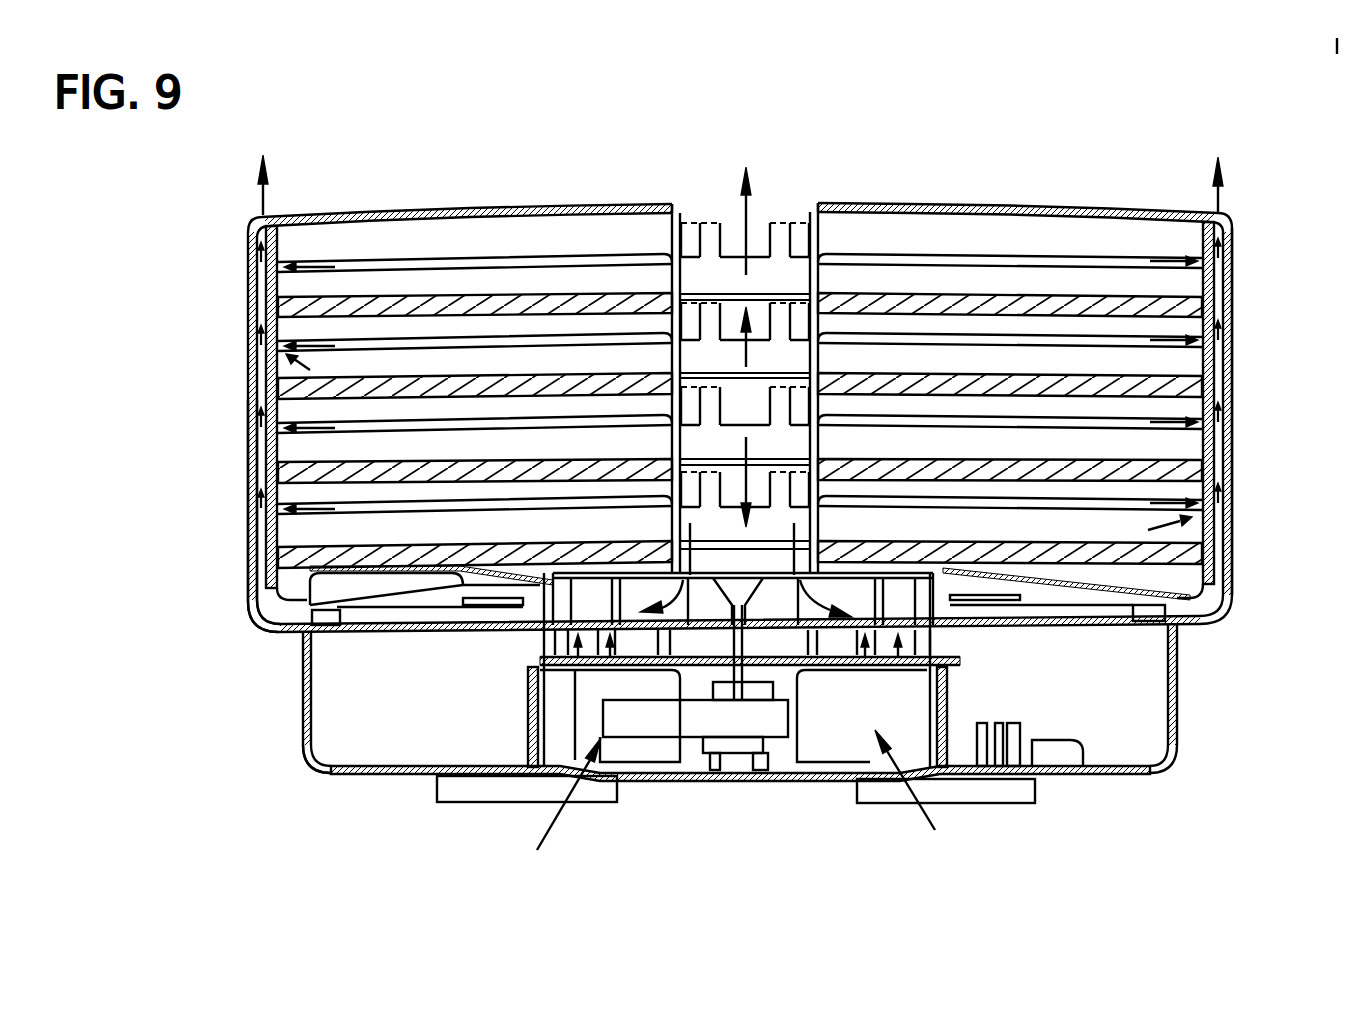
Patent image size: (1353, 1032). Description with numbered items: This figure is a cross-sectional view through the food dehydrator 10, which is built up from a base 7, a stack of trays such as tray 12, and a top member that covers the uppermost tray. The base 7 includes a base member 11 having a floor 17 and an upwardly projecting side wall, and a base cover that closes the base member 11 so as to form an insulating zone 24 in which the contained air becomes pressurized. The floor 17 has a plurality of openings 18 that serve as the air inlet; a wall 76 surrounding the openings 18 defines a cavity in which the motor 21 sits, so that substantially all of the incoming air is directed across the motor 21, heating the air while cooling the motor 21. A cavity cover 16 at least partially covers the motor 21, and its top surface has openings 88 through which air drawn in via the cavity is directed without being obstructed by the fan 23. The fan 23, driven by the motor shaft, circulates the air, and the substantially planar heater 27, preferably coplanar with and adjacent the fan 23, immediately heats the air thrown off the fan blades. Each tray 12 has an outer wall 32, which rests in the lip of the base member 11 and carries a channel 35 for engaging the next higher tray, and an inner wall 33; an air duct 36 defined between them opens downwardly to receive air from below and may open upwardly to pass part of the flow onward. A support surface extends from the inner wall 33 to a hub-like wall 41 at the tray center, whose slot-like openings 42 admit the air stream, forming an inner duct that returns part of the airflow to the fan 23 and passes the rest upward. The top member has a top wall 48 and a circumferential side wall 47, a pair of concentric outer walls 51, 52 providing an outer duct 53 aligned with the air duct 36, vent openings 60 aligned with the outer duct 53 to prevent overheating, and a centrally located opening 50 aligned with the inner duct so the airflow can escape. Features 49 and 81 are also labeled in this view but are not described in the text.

The base 7 is at (346, 808).
The food dehydrator 10 is at (253, 818).
The base member 11 is at (302, 707).
The tray 12 is at (1236, 545).
The cavity cover 16 is at (540, 663).
The floor 17 is at (370, 757).
The openings 18 is at (557, 770).
The motor 21 is at (733, 743).
The fan 23 is at (927, 630).
The insulating zone 24 is at (1090, 705).
The heater 27 is at (520, 617).
The outer wall 32 is at (248, 545).
The inner wall 33 is at (282, 542).
The channel 35 is at (250, 512).
The air duct 36 is at (231, 581).
The hub-like wall 41 is at (824, 545).
The slot-like openings 42 is at (748, 410).
The circumferential side wall 47 is at (1235, 235).
The top wall 48 is at (465, 210).
The filter tray 49 is at (910, 243).
The opening 50 is at (773, 361).
The outer wall 51 is at (258, 245).
The outer wall 52 is at (270, 250).
The outer duct 53 is at (262, 267).
The vent openings 60 is at (262, 220).
The wall 76 is at (527, 733).
The corner portion 81 is at (250, 593).
The openings 88 is at (532, 688).